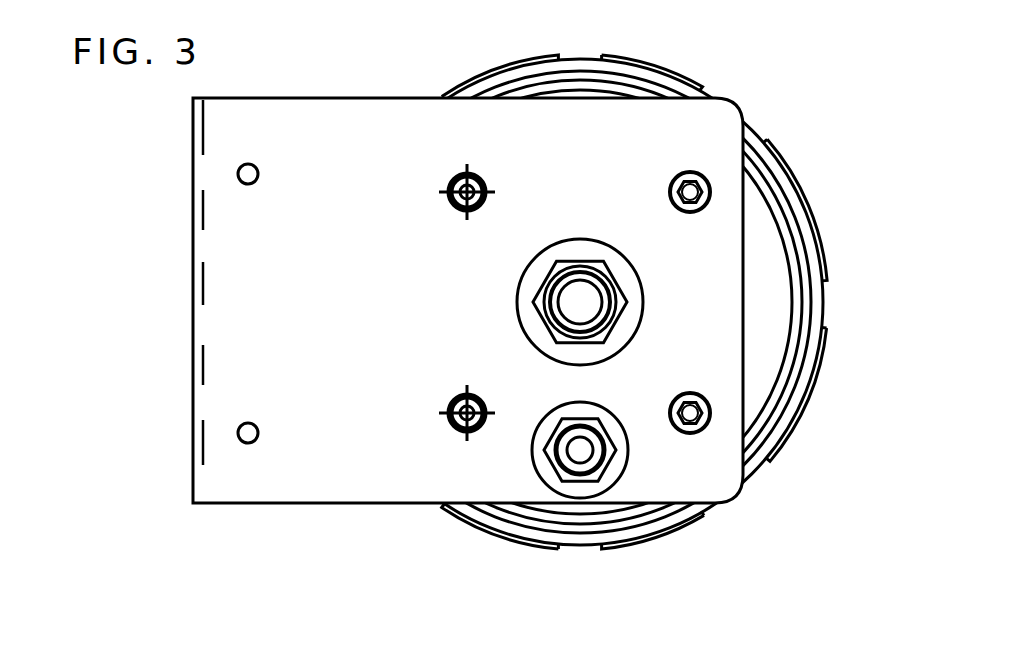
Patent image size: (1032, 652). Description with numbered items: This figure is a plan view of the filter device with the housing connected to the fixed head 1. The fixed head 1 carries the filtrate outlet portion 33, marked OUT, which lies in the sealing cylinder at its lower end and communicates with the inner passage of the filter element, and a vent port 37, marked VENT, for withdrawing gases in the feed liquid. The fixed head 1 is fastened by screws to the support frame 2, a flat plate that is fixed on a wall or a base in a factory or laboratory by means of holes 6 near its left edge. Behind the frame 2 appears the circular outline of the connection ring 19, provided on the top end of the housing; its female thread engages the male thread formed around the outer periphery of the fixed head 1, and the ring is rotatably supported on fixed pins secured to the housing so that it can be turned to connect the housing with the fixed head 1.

The fixed head 1 is at (763, 277).
The support frame 2 is at (218, 320).
The holes 6 is at (238, 178).
The connection ring 19 is at (793, 192).
The filtrate outlet portion 33 is at (587, 303).
The vent port 37 is at (587, 455).